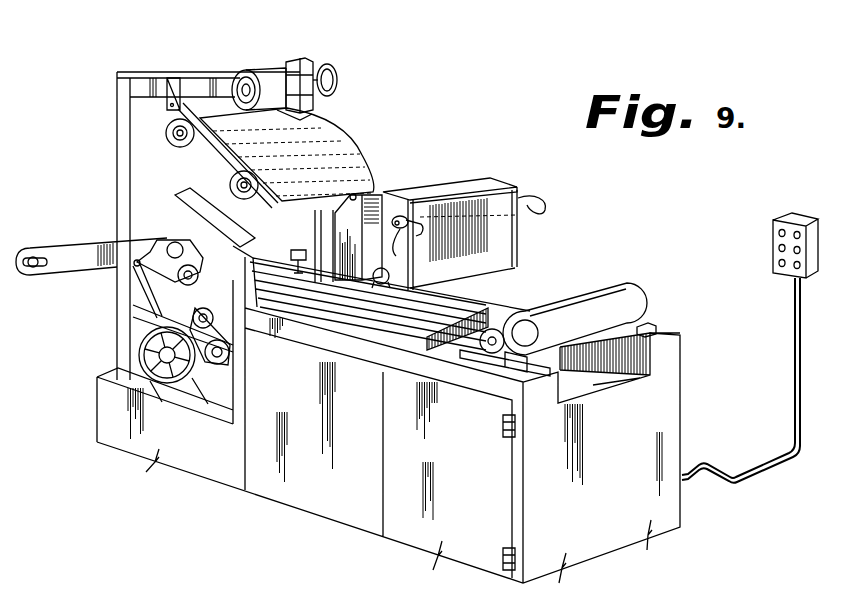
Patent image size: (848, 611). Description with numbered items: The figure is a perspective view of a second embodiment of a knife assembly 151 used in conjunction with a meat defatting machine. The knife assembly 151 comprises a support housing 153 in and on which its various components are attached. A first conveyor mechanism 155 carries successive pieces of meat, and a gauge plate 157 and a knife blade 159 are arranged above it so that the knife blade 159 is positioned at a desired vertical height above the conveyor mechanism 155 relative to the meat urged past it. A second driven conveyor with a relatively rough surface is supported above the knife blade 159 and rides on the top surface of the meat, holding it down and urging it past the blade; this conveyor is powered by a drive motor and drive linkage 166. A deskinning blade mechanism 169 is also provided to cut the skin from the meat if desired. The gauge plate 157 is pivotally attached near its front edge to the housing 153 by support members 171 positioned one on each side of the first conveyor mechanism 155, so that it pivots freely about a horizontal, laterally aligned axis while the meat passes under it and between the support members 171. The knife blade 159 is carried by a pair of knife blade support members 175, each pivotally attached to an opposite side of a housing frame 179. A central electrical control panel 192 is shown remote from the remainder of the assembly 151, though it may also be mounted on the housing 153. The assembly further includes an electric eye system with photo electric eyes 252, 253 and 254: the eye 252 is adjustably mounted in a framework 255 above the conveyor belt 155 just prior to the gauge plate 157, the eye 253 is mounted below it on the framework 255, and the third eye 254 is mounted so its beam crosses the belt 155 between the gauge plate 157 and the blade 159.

The knife assembly 151 is at (451, 199).
The support housing 153 is at (683, 405).
The first conveyor mechanism 155 is at (585, 282).
The gauge plate 157 is at (428, 152).
The knife blade 159 is at (222, 205).
The drive motor and drive linkage 166 is at (266, 72).
The deskinning blade mechanism 169 is at (178, 228).
The support members 171 is at (482, 247).
The knife blade support members 175 is at (381, 298).
The housing frame 179 is at (167, 297).
The central electrical control panel 192 is at (776, 218).
The photo electric eye 252 is at (538, 207).
The photo electric eye 253 is at (386, 285).
The photo electric eye 254 is at (303, 274).
The framework 255 is at (517, 248).